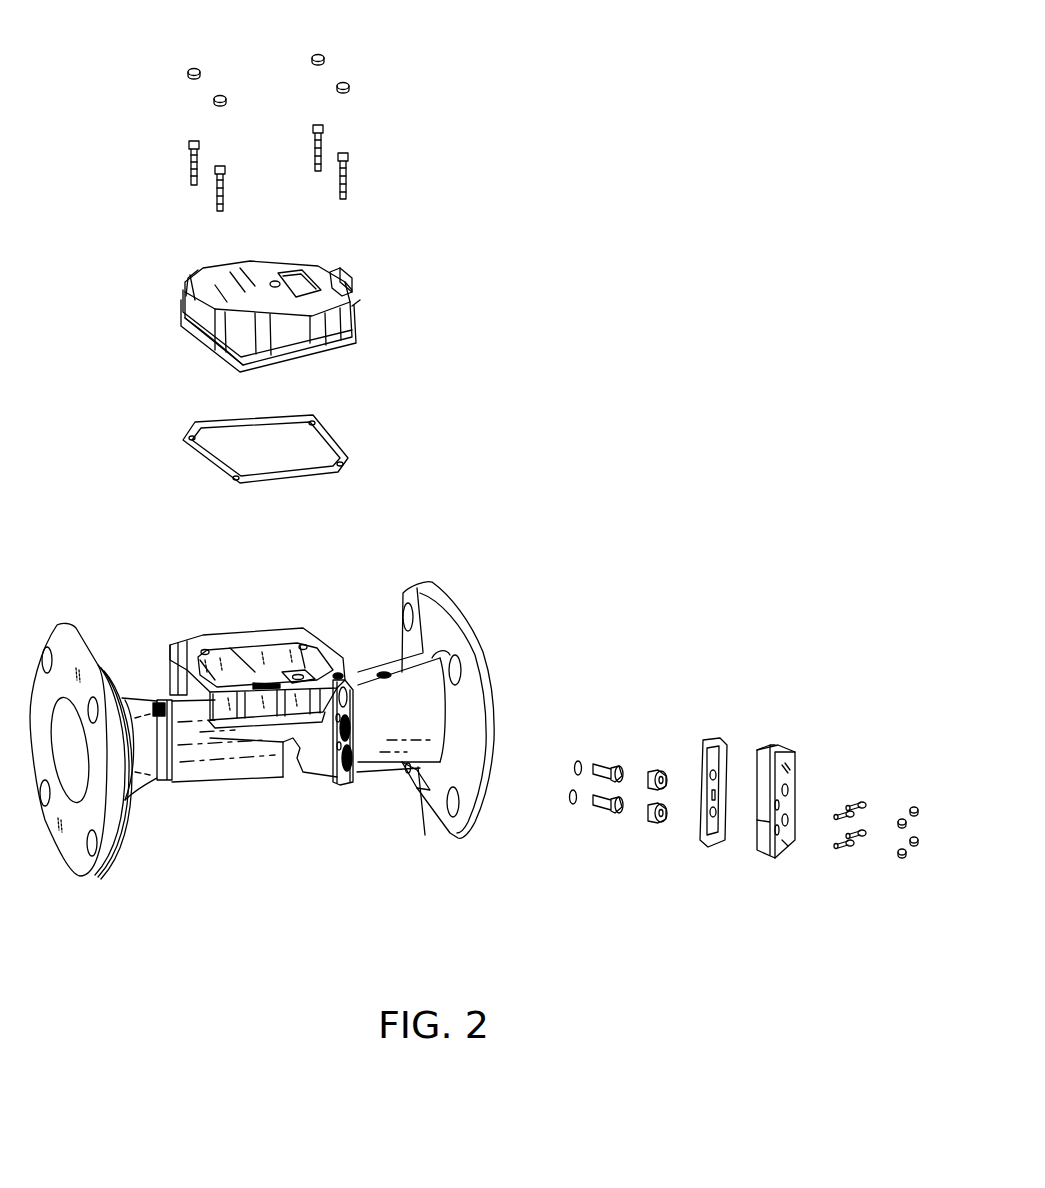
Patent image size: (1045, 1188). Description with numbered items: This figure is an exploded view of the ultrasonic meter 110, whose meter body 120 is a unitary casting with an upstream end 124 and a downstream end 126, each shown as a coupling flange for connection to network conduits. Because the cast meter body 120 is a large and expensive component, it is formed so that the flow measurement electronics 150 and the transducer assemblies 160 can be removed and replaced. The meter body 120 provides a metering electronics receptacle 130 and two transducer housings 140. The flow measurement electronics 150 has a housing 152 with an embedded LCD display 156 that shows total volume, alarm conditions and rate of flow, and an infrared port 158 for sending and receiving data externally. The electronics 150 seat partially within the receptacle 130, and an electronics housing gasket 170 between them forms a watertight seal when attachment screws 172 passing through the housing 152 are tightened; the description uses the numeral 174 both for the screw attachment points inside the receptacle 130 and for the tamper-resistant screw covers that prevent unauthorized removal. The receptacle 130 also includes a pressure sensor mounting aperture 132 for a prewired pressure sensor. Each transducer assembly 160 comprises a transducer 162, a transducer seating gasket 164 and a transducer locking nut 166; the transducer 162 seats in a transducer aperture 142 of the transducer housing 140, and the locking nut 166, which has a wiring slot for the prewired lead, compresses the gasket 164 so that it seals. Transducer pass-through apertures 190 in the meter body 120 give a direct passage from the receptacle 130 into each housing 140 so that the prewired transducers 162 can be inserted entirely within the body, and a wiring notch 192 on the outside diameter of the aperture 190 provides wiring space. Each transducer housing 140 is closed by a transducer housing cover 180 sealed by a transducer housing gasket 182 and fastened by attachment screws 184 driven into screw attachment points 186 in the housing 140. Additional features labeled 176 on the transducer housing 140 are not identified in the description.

The ultrasonic meter 110 is at (572, 380).
The meter body 120 is at (187, 782).
The upstream end 124 is at (108, 875).
The downstream end 126 is at (463, 838).
The metering electronics receptacle 130 is at (270, 659).
The pressure sensor mounting aperture 132 is at (292, 673).
The transducer housings 140 is at (183, 634).
The transducer apertures 142 is at (353, 772).
The flow measurement electronics 150 is at (316, 286).
The measurement electronics housing 152 is at (353, 311).
The LCD display 156 is at (292, 282).
The infrared port 158 is at (274, 281).
The transducer assemblies 160 is at (620, 796).
The transducers 162 is at (608, 815).
The transducer seating gasket 164 is at (570, 805).
The transducer locking nut 166 is at (650, 827).
The electronics housing gasket 170 is at (330, 430).
The attachment screws 172 is at (188, 141).
The tamper-resistant screw covers 174 is at (188, 70).
The holes 176 is at (337, 720).
The transducer housing cover 180 is at (782, 750).
The transducer housing gasket 182 is at (718, 740).
The attachment screws 184 is at (865, 790).
The screw attachment points 186 is at (918, 802).
The transducer pass-through apertures 190 is at (425, 656).
The wiring notch 192 is at (384, 674).